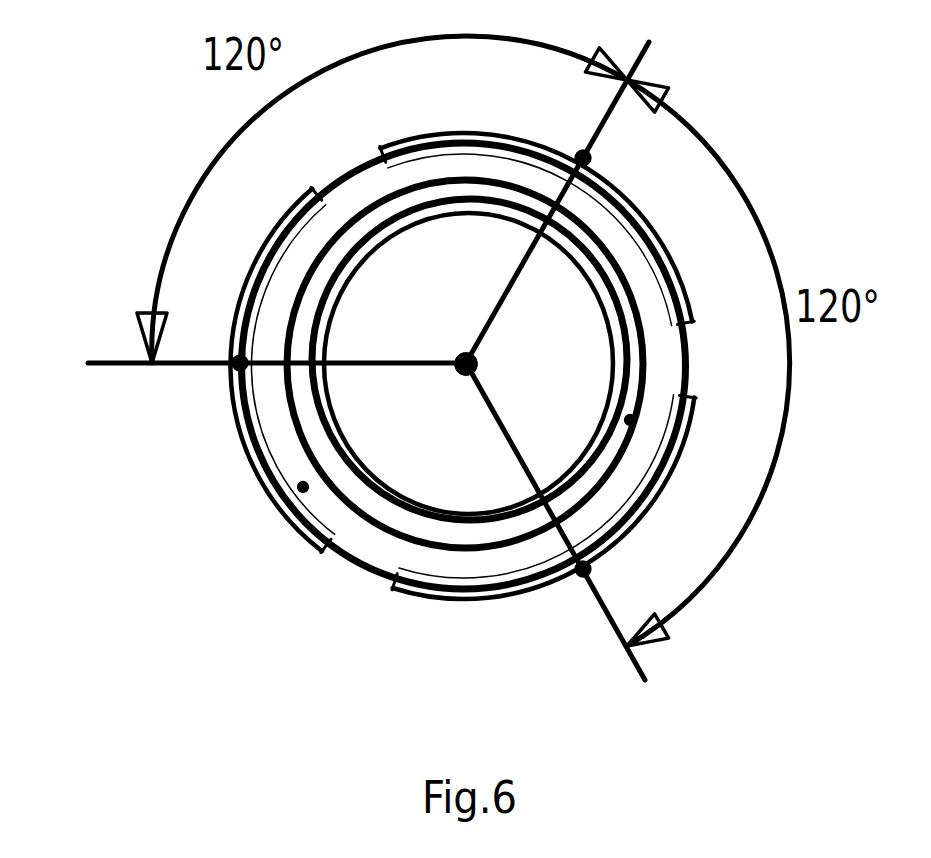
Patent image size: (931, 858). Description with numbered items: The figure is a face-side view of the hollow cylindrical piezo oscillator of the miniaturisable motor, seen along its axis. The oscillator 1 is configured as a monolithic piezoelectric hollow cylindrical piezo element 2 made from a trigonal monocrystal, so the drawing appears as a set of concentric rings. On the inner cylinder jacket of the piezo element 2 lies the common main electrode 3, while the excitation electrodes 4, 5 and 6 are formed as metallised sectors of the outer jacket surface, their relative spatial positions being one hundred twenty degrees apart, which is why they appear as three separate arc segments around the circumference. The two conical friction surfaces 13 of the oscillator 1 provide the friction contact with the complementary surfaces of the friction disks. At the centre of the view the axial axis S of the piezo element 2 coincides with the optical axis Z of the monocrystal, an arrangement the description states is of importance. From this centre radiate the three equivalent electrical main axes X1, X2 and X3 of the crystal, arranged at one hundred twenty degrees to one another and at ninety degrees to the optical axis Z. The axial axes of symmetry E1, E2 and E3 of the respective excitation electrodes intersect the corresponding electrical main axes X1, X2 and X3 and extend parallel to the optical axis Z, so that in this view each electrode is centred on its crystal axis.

The oscillator 1 is at (312, 617).
The piezo element 2 is at (292, 494).
The common main electrode 3 is at (398, 472).
The excitation electrode 4 is at (445, 624).
The excitation electrode 5 is at (243, 245).
The excitation electrode 6 is at (673, 213).
The conical friction surface 13 is at (633, 428).
The axial axis of symmetry of excitation electrode E1 is at (221, 385).
The axial axis of symmetry of excitation electrode E2 is at (569, 142).
The axial axis of symmetry of excitation electrode E3 is at (572, 591).
The electrical main axis X1 is at (240, 409).
The electrical main axis X2 is at (605, 197).
The electrical main axis X3 is at (586, 533).
The optical axis Z is at (454, 332).
The axial axis S is at (500, 353).